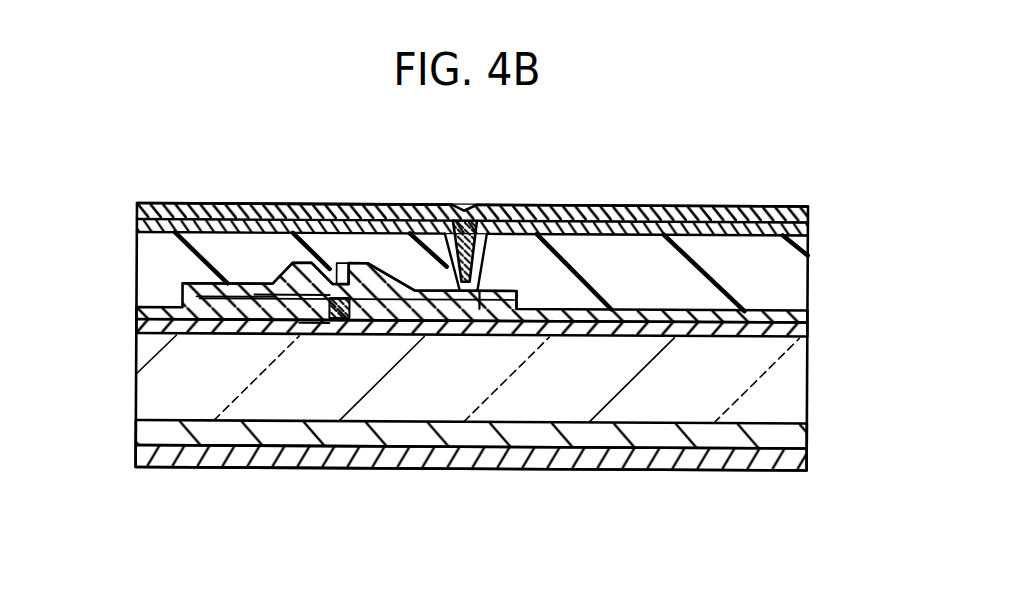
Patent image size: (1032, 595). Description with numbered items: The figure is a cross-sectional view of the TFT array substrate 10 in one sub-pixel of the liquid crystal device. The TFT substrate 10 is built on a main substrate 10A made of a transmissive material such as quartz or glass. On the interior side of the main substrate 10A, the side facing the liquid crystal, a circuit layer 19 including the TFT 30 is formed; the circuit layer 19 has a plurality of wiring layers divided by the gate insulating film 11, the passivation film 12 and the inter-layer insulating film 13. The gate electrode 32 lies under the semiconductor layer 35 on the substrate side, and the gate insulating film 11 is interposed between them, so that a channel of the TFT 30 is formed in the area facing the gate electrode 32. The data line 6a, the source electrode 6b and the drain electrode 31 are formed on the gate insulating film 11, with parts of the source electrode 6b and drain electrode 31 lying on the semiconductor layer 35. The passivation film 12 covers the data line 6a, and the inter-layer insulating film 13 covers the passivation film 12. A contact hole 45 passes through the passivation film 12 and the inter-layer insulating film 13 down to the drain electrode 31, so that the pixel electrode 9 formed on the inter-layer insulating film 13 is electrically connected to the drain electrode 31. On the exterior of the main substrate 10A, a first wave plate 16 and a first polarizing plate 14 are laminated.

The data line 6a is at (200, 292).
The source electrode 6b is at (303, 330).
The pixel electrode 9 is at (718, 217).
The TFT array substrate 10 is at (122, 204).
The main substrate 10A is at (797, 385).
The gate insulating film 11 is at (798, 327).
The passivation film 12 is at (798, 318).
The inter-layer insulating film 13 is at (795, 279).
The first polarizing plate 14 is at (803, 465).
The first wave plate 16 is at (800, 437).
The circuit layer 19 is at (877, 232).
The TFT 30 is at (389, 350).
The drain electrode 31 is at (492, 322).
The gate electrode 32 is at (343, 318).
The semiconductor layer 35 is at (297, 318).
The contact hole 45 is at (456, 205).